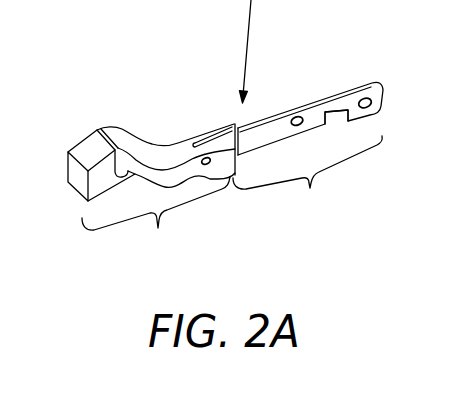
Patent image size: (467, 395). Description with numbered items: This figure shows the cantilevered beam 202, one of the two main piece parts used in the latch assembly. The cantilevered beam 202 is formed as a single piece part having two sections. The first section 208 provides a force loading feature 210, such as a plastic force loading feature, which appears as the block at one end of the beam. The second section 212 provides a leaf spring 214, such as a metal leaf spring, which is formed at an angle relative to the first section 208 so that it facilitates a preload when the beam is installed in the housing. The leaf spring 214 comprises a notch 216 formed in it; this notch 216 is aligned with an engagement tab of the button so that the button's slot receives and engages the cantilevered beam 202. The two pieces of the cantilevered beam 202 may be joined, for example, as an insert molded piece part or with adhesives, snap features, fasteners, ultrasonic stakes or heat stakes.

The cantilevered beam 202 is at (217, 133).
The first section 208 is at (143, 184).
The force loading feature 210 is at (80, 148).
The second section 212 is at (308, 138).
The leaf spring 214 is at (265, 130).
The notch 216 is at (338, 113).